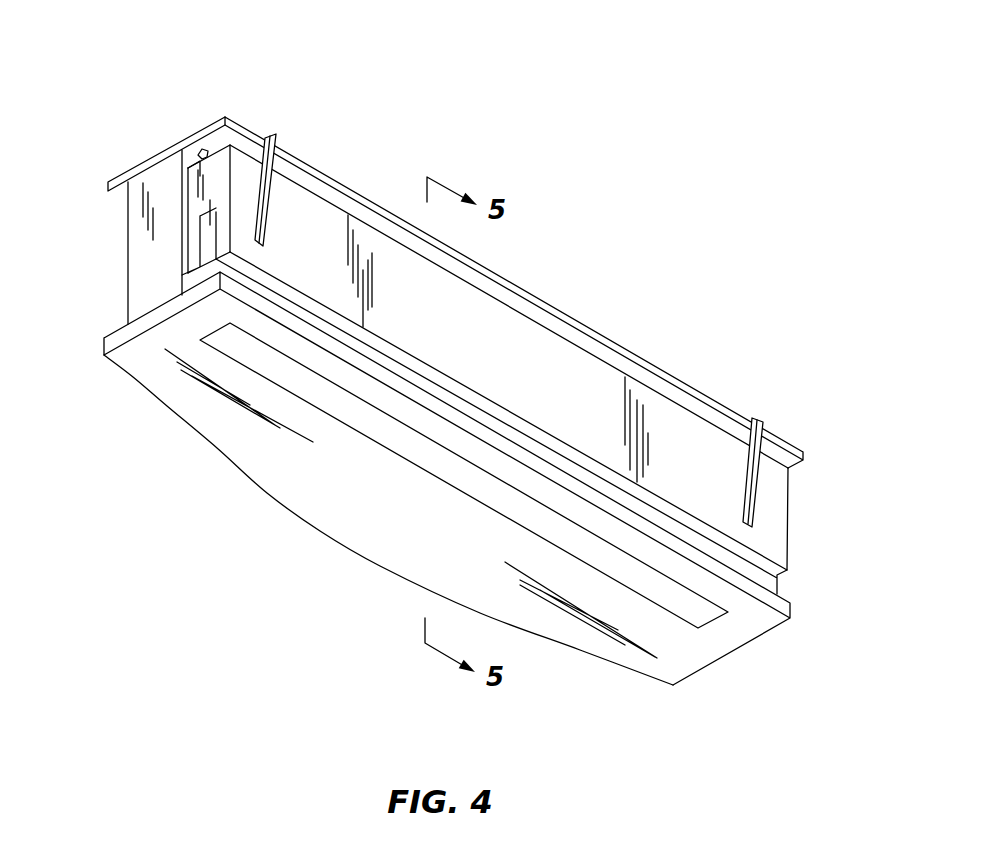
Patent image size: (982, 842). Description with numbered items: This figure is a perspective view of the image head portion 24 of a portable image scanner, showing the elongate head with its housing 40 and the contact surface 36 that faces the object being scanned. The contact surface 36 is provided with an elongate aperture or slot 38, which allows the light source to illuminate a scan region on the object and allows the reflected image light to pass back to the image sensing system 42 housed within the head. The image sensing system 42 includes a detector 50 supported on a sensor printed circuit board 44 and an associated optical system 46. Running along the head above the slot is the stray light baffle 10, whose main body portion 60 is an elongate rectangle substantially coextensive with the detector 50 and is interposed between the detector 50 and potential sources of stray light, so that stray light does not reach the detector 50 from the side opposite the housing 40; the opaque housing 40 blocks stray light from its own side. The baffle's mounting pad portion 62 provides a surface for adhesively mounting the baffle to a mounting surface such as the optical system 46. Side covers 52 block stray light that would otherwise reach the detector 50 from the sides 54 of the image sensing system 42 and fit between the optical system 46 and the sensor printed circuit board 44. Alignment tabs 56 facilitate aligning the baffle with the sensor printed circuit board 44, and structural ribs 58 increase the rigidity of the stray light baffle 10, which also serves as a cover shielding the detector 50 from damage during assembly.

The stray light baffle 10 is at (808, 517).
The image head portion 24 is at (712, 309).
The contact surface 36 is at (420, 519).
The elongate aperture or slot 38 is at (377, 443).
The housing 40 is at (112, 333).
The image sensing system 42 is at (166, 254).
The sensor printed circuit board 44 is at (122, 176).
The optical system 46 is at (200, 216).
The detector 50 is at (190, 146).
The side covers 52 is at (216, 128).
The sides of the image sensing system 54 is at (249, 58).
The alignment tabs 56 is at (276, 135).
The structural ribs 58 is at (283, 192).
The main body portion 60 is at (810, 485).
The mounting pad portion 62 is at (807, 559).